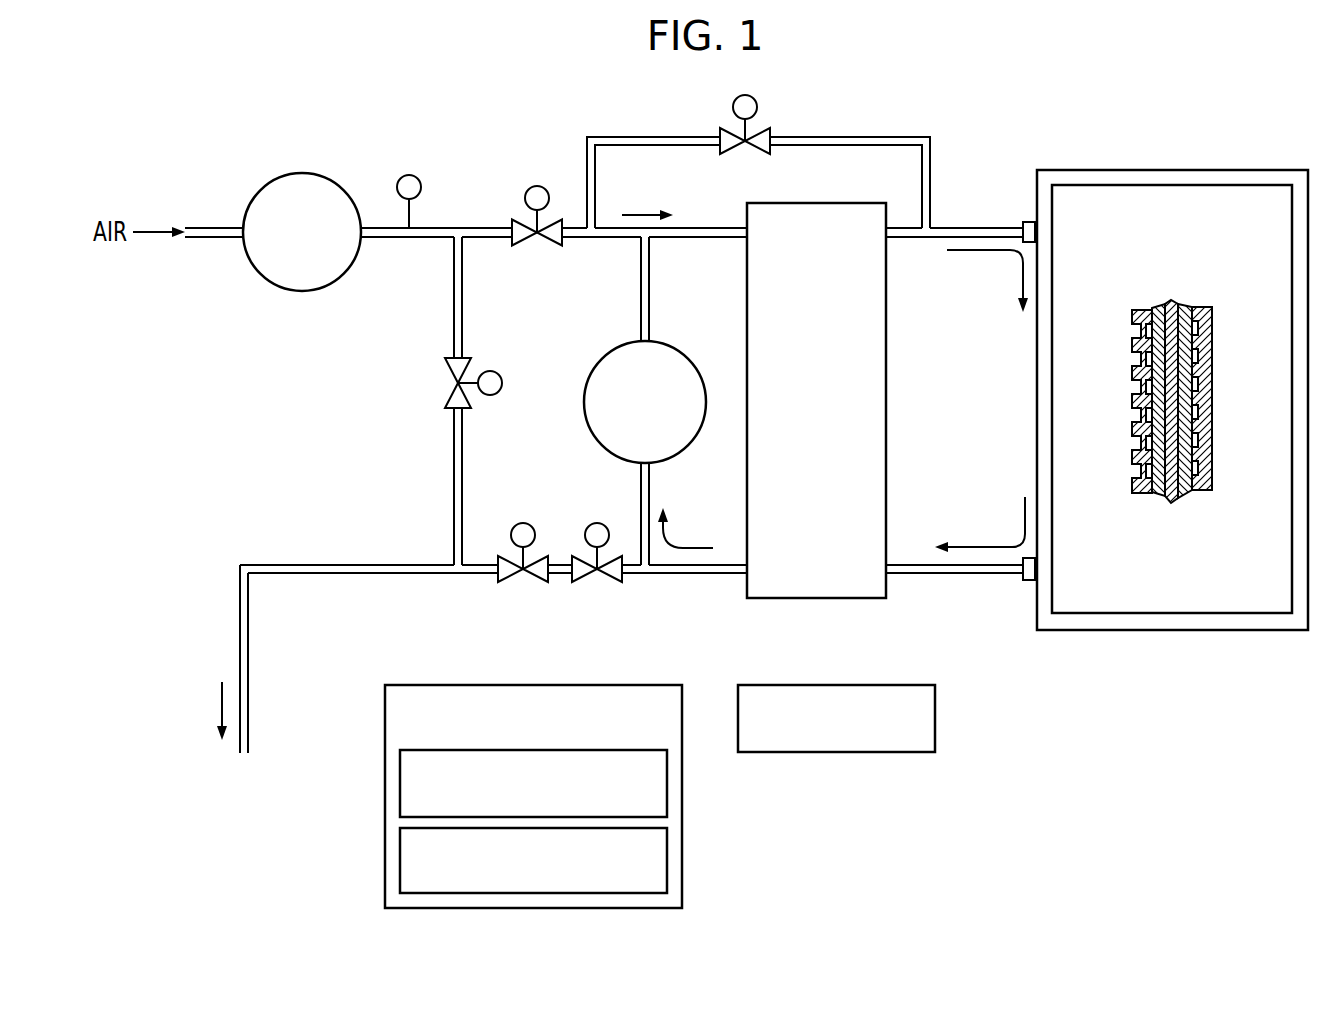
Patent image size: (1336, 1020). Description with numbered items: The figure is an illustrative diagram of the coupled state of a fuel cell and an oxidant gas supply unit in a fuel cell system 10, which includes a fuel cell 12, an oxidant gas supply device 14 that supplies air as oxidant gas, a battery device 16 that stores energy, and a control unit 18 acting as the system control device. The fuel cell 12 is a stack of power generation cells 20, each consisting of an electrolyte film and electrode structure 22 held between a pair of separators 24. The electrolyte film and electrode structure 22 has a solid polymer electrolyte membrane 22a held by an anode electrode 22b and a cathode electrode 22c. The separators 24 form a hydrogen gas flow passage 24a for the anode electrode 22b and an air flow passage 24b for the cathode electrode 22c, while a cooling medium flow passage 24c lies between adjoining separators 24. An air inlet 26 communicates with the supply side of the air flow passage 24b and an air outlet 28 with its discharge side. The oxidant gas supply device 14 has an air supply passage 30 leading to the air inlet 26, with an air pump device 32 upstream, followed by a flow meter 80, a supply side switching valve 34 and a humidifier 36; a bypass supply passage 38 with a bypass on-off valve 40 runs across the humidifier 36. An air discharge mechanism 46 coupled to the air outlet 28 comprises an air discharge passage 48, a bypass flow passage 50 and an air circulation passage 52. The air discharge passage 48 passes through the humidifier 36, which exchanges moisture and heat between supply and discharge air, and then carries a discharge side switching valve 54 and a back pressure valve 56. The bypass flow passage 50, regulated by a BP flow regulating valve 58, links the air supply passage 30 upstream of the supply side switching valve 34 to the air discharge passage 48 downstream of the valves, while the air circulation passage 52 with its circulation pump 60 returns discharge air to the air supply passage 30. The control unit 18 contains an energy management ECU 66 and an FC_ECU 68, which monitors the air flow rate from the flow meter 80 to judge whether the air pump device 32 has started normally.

The fuel cell system 10 is at (261, 119).
The fuel cell 12 is at (1172, 157).
The oxidant gas supply device 14 is at (268, 236).
The battery device 16 is at (837, 684).
The control unit 18 is at (509, 772).
The power generation cell 20 is at (1108, 248).
The electrolyte film and electrode structure 22 is at (1170, 413).
The solid polymer electrolyte membrane 22a is at (1173, 504).
The anode electrode 22b is at (1185, 494).
The cathode electrode 22c is at (1158, 494).
The separators 24 is at (1165, 370).
The hydrogen gas flow passage 24a is at (1195, 402).
The air flow passage 24b is at (1148, 430).
The cooling medium flow passage 24c is at (1137, 368).
The air inlet 26 is at (1027, 221).
The air outlet 28 is at (1027, 581).
The air supply passage 30 is at (967, 226).
The air pump device 32 is at (281, 291).
The supply side switching valve 34 is at (528, 186).
The humidifier 36 is at (887, 393).
The bypass supply passage 38 is at (867, 137).
The bypass on-off valve 40 is at (737, 102).
The air discharge mechanism 46 is at (226, 558).
The air discharge passage 48 is at (317, 564).
The bypass flow passage 50 is at (453, 455).
The air circulation passage 52 is at (650, 280).
The discharge side switching valve 54 is at (585, 583).
The back pressure valve 56 is at (518, 581).
The BP flow regulating valve 58 is at (446, 393).
The circulation pump 60 is at (602, 352).
The energy management ECU 66 is at (399, 765).
The FC_ECU 68 is at (399, 842).
The flow meter 80 is at (412, 176).